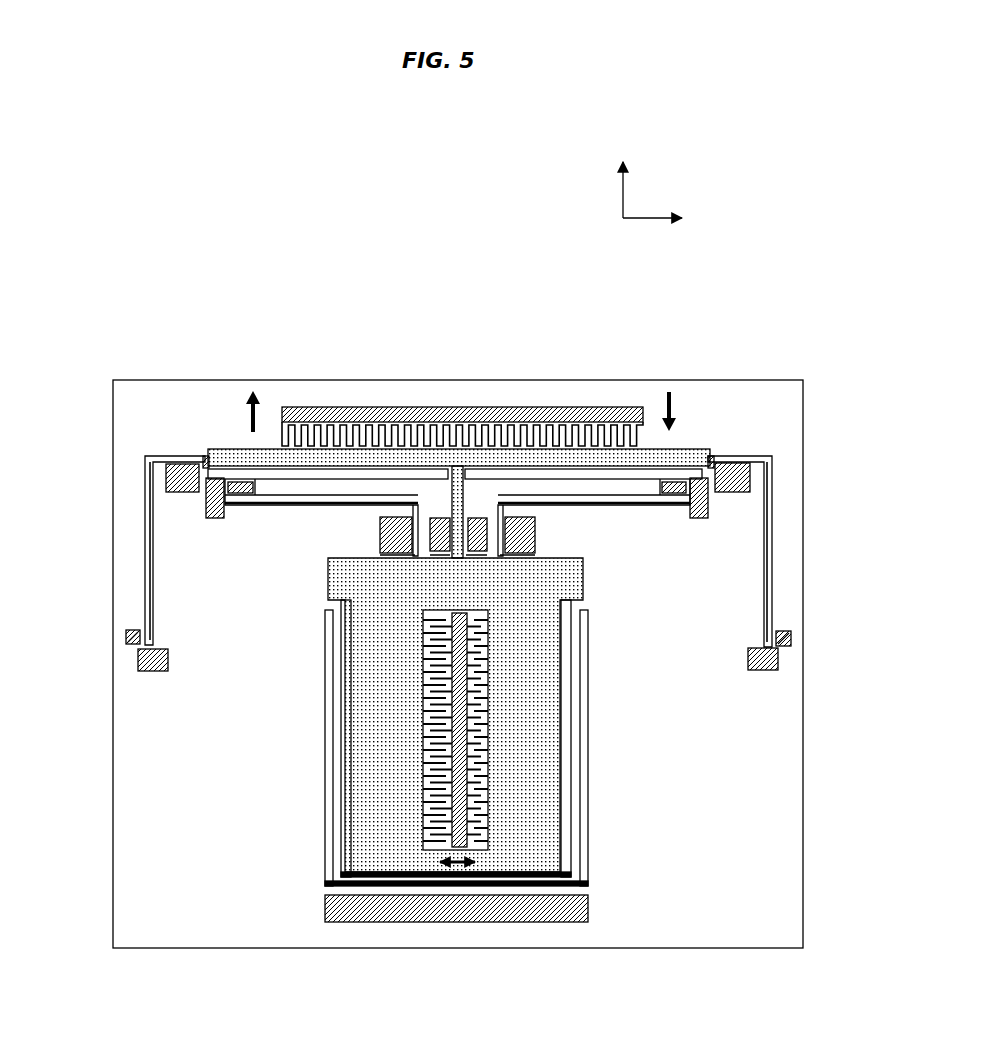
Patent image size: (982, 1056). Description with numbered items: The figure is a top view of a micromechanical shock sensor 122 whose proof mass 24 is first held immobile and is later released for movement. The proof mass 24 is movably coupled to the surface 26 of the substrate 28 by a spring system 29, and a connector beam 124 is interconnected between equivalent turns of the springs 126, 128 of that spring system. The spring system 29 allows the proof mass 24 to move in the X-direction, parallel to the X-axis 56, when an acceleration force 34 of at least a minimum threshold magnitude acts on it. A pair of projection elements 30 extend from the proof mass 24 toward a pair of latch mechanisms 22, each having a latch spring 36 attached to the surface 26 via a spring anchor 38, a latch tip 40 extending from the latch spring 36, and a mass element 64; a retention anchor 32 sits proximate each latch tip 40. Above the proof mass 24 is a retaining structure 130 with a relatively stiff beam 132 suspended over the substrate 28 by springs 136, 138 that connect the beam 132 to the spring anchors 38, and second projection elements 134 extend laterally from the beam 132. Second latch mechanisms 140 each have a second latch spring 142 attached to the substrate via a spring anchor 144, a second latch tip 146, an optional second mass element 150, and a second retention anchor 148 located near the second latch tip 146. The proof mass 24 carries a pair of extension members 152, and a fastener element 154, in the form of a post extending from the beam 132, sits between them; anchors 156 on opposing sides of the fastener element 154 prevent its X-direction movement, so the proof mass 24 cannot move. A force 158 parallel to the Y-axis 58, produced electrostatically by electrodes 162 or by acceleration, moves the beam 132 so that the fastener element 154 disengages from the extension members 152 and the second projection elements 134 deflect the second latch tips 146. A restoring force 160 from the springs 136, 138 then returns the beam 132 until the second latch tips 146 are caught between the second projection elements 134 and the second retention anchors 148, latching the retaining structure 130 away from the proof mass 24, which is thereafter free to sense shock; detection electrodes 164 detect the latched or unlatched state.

The latch mechanism 22 is at (286, 540).
The proof mass 24 is at (367, 685).
The surface 26 is at (152, 941).
The substrate 28 is at (113, 922).
The spring system 29 is at (311, 824).
The projection element 30 is at (432, 556).
The retention anchor 32 is at (382, 516).
The acceleration force 34 is at (455, 866).
The latch spring 36 is at (332, 505).
The spring anchor 38 is at (205, 503).
The latch tip 40 is at (410, 554).
The X-axis 56 is at (647, 218).
The Y-axis 58 is at (625, 174).
The mass element 64 is at (257, 495).
The micromechanical shock sensor 122 is at (305, 222).
The connector beam 124 is at (366, 883).
The spring 126 is at (324, 738).
The spring 128 is at (588, 747).
The retaining structure 130 is at (728, 404).
The beam 132 is at (207, 455).
The second projection element 134 is at (207, 456).
The spring 136 is at (227, 449).
The spring 138 is at (684, 470).
The second latch mechanism 140 is at (118, 526).
The second latch spring 142 is at (145, 540).
The spring anchor 144 is at (153, 673).
The second latch tip 146 is at (207, 456).
The second retention anchor 148 is at (178, 464).
The second mass element 150 is at (125, 635).
The extension member 152 is at (447, 560).
The fastener element 154 is at (457, 465).
The anchor 156 is at (440, 517).
The force 158 is at (258, 412).
The restoring force 160 is at (664, 417).
The electrodes 162 is at (334, 405).
The detection electrodes 164 is at (499, 812).